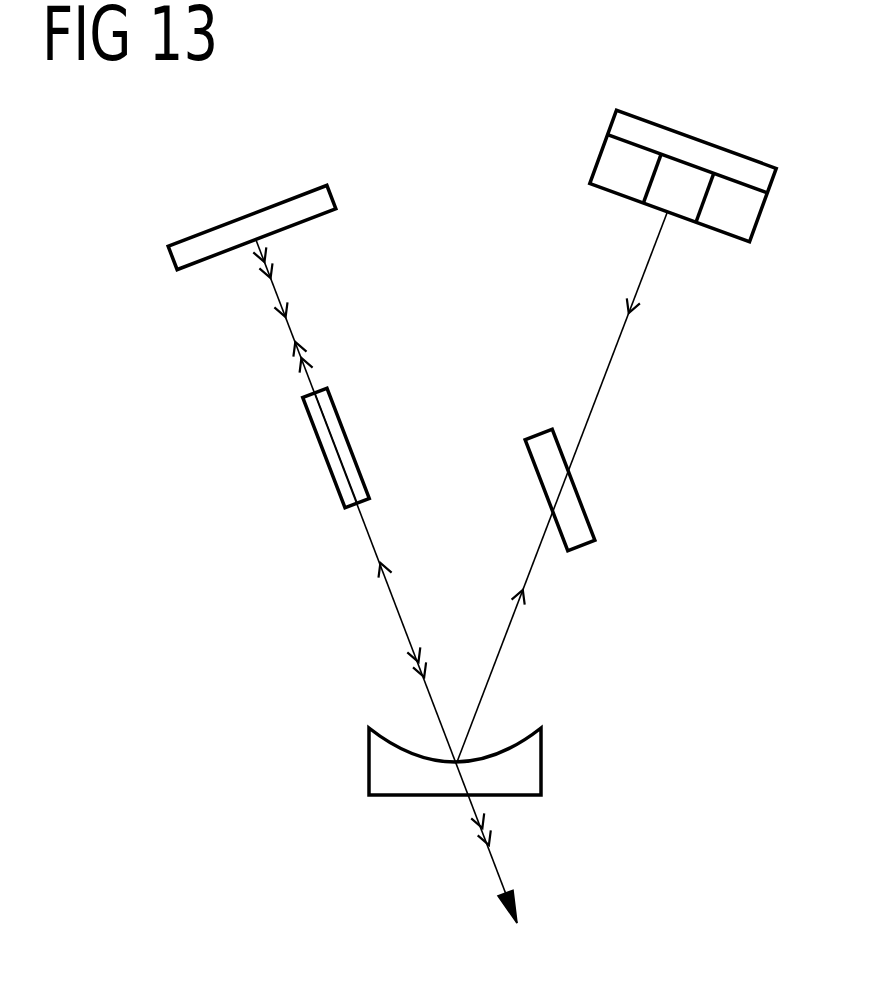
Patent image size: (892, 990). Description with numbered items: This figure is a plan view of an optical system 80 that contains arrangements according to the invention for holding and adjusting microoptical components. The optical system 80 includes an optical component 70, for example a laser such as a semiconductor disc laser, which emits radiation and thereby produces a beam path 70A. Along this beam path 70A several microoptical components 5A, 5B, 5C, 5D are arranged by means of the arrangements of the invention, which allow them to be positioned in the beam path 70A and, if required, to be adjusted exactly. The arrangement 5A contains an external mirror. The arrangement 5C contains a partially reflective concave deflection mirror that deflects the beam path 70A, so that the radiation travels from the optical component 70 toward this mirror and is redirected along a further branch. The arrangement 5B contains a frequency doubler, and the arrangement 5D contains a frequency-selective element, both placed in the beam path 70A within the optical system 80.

The microoptical component arrangement with external mirror 5A is at (268, 223).
The microoptical component arrangement with frequency doubler 5B is at (335, 467).
The microoptical component arrangement with partially reflective concave deflection 5C is at (523, 772).
The microoptical component arrangement with frequency-selective element 5D is at (578, 523).
The optical component 70 is at (690, 152).
The beam path 70A is at (604, 389).
The optical system 80 is at (170, 412).